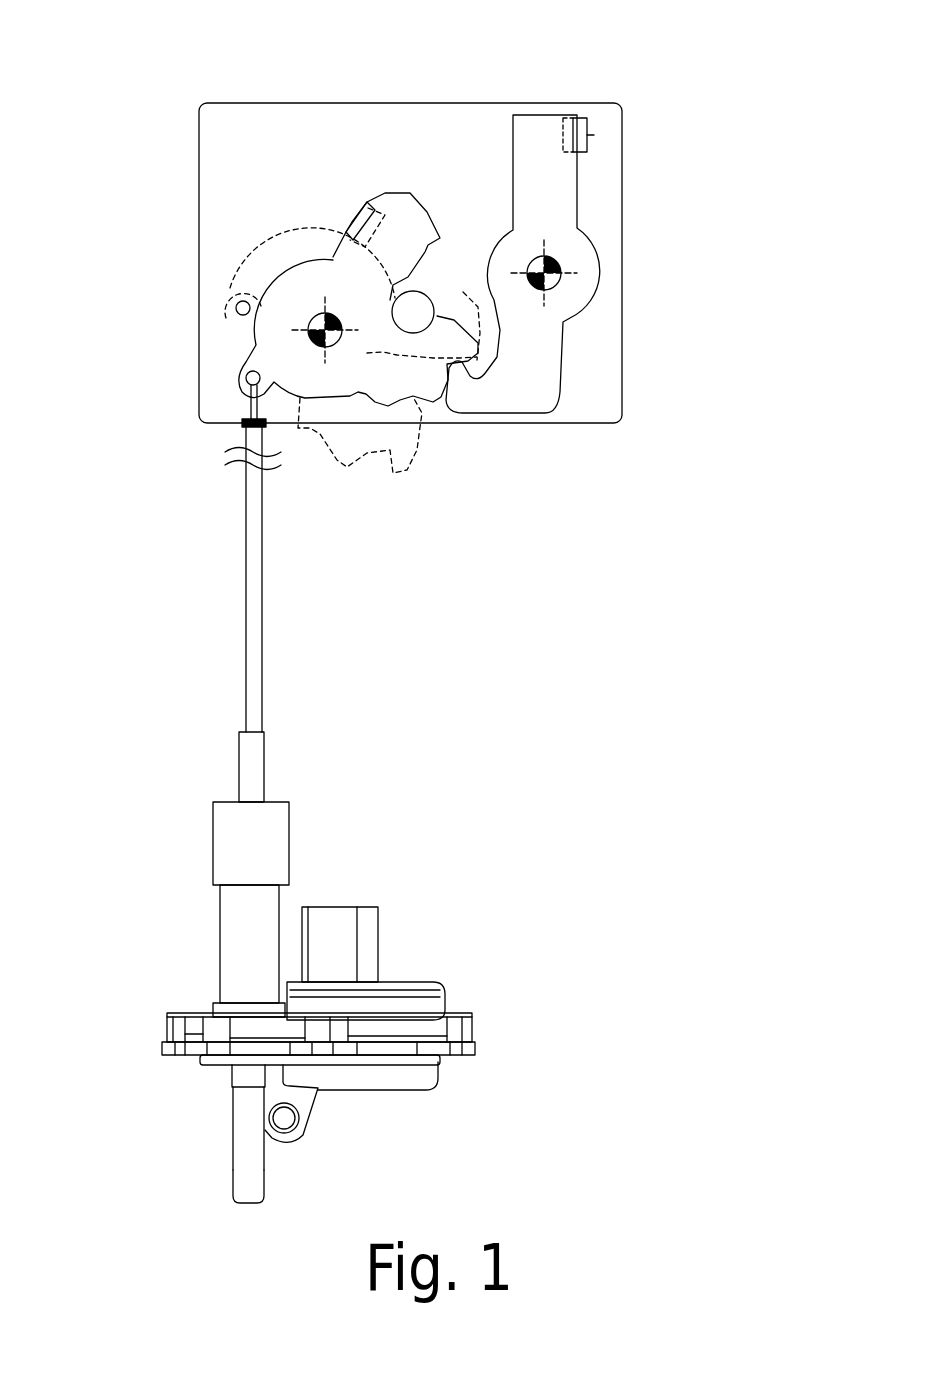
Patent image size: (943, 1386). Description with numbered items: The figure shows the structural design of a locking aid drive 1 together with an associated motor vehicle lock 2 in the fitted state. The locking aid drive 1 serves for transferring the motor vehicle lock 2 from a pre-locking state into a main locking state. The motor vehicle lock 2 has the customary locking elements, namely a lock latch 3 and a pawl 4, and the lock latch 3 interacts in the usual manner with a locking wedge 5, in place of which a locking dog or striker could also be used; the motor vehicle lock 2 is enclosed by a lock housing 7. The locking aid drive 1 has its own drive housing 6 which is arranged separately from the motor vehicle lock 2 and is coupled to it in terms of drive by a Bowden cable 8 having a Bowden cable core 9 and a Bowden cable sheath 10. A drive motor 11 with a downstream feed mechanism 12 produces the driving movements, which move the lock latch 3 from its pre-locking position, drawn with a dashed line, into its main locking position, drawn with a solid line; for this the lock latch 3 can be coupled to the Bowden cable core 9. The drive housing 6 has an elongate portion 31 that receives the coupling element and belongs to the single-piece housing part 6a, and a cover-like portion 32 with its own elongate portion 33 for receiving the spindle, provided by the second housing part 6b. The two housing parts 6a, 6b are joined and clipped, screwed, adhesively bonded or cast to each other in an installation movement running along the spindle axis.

The locking aid drive 1 is at (350, 1002).
The motor vehicle lock 2 is at (468, 243).
The lock latch 3 is at (308, 283).
The pawl 4 is at (562, 190).
The locking wedge 5 is at (417, 310).
The drive housing 6 is at (213, 974).
The housing part 6a is at (215, 913).
The second housing part 6b is at (228, 1128).
The lock housing 7 is at (500, 103).
The Bowden cable 8 is at (285, 593).
The Bowden cable core 9 is at (243, 410).
The Bowden cable sheath 10 is at (246, 673).
The drive motor 11 is at (430, 1100).
The feed mechanism 12 is at (294, 903).
The elongate portion 31 is at (230, 933).
The cover-like portion 32 is at (463, 1077).
The elongate portion 33 is at (238, 1185).